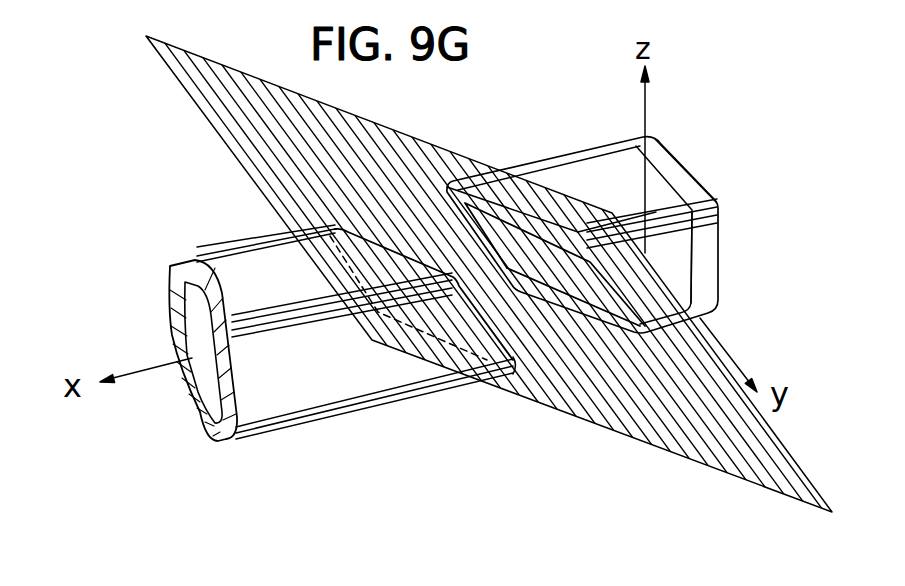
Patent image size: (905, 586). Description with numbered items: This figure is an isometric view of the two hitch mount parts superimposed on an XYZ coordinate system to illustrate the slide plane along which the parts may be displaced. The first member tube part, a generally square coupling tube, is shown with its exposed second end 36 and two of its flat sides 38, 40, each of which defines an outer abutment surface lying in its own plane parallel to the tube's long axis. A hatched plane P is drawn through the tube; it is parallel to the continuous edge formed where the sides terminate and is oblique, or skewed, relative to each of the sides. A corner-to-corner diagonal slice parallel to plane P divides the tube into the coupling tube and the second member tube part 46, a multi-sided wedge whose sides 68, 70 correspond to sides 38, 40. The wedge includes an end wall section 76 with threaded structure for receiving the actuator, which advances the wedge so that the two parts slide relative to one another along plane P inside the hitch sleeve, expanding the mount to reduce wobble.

The plane P is at (212, 88).
The exposed second end 36 is at (318, 314).
The flat side 38 is at (207, 253).
The flat side 40 is at (310, 388).
The second member tube part 46 is at (611, 207).
The side 68 is at (547, 175).
The side 70 is at (673, 262).
The end wall section 76 is at (690, 168).